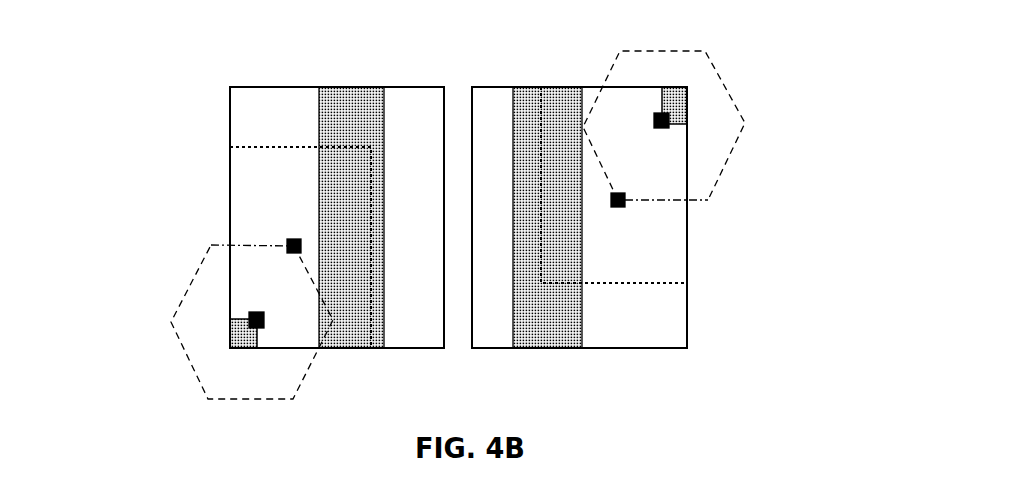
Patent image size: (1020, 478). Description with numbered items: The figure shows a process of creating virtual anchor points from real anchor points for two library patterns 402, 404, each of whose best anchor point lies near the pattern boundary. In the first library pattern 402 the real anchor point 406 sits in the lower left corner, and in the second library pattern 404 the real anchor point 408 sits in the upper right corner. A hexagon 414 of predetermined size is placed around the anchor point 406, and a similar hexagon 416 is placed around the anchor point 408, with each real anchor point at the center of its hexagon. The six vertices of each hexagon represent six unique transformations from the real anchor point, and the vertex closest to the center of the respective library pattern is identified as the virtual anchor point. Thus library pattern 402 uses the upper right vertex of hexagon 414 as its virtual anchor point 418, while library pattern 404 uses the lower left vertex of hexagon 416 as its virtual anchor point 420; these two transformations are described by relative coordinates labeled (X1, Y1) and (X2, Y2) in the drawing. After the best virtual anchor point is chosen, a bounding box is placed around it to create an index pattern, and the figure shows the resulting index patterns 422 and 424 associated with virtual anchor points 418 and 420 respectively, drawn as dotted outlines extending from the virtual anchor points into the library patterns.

The library pattern 402 is at (337, 175).
The library pattern 404 is at (592, 176).
The anchor point 406 is at (253, 313).
The anchor point 408 is at (668, 124).
The hexagon 414 is at (178, 305).
The hexagon 416 is at (743, 108).
The virtual anchor point 418 is at (291, 238).
The virtual anchor point 420 is at (618, 207).
The index pattern 422 is at (275, 145).
The index pattern 424 is at (642, 285).